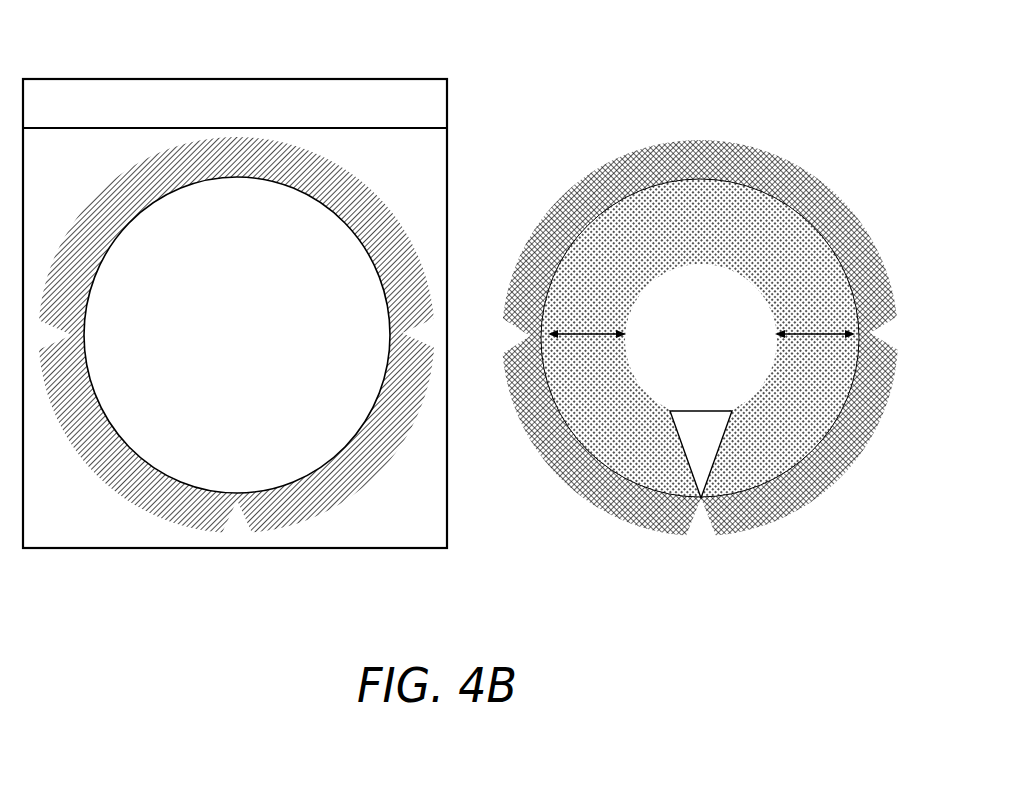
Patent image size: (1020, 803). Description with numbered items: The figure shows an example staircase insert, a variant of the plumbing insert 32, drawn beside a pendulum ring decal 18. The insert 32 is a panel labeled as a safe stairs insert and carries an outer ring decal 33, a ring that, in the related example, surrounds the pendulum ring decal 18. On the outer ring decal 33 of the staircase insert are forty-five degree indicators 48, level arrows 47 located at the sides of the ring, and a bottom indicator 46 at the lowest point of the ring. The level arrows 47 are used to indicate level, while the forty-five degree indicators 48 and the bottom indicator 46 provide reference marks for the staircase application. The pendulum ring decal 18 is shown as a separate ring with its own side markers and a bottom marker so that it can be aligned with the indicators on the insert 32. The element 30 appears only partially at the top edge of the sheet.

The pendulum ring decal 18 is at (729, 247).
The stair assembly 30 is at (888, 7).
The plumbing insert 32 is at (448, 197).
The outer ring decal 33 is at (303, 506).
The bottom indicator 46 is at (239, 525).
The level arrows 47 is at (412, 330).
The 45 degree indicators 48 is at (373, 227).